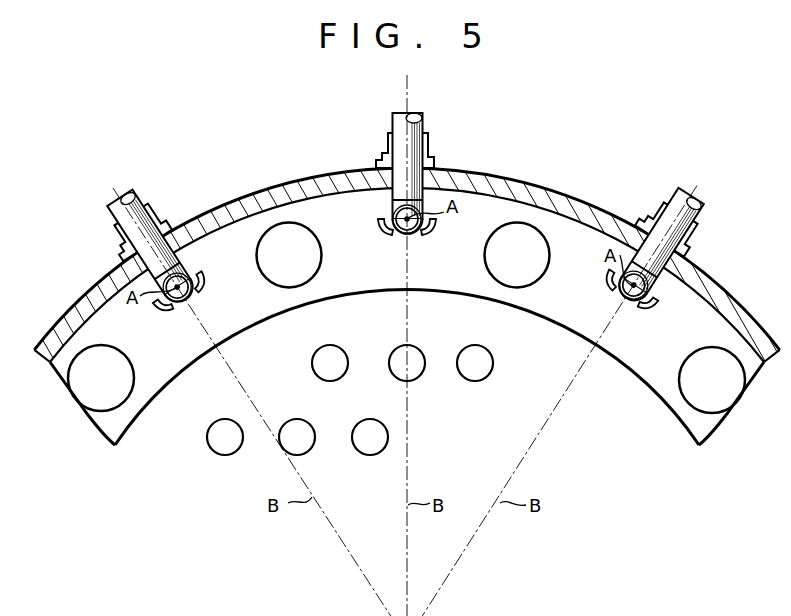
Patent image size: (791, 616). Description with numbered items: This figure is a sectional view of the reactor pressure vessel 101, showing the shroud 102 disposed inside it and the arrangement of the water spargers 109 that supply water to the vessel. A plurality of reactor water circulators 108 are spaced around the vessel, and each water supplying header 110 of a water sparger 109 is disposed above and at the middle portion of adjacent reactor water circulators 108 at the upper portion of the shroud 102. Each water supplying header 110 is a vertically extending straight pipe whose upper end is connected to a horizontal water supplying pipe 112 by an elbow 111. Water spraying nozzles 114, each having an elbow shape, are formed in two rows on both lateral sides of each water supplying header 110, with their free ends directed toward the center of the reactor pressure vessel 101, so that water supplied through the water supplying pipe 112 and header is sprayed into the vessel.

The reactor pressure vessel 101 is at (541, 186).
The shroud 102 is at (652, 382).
The reactor water circulators 108 is at (124, 407).
The water sparger 109 is at (197, 268).
The water supplying header 110 is at (182, 304).
The elbow 111 is at (192, 300).
The water supplying pipe 112 is at (125, 184).
The water spraying nozzles 114 is at (163, 310).